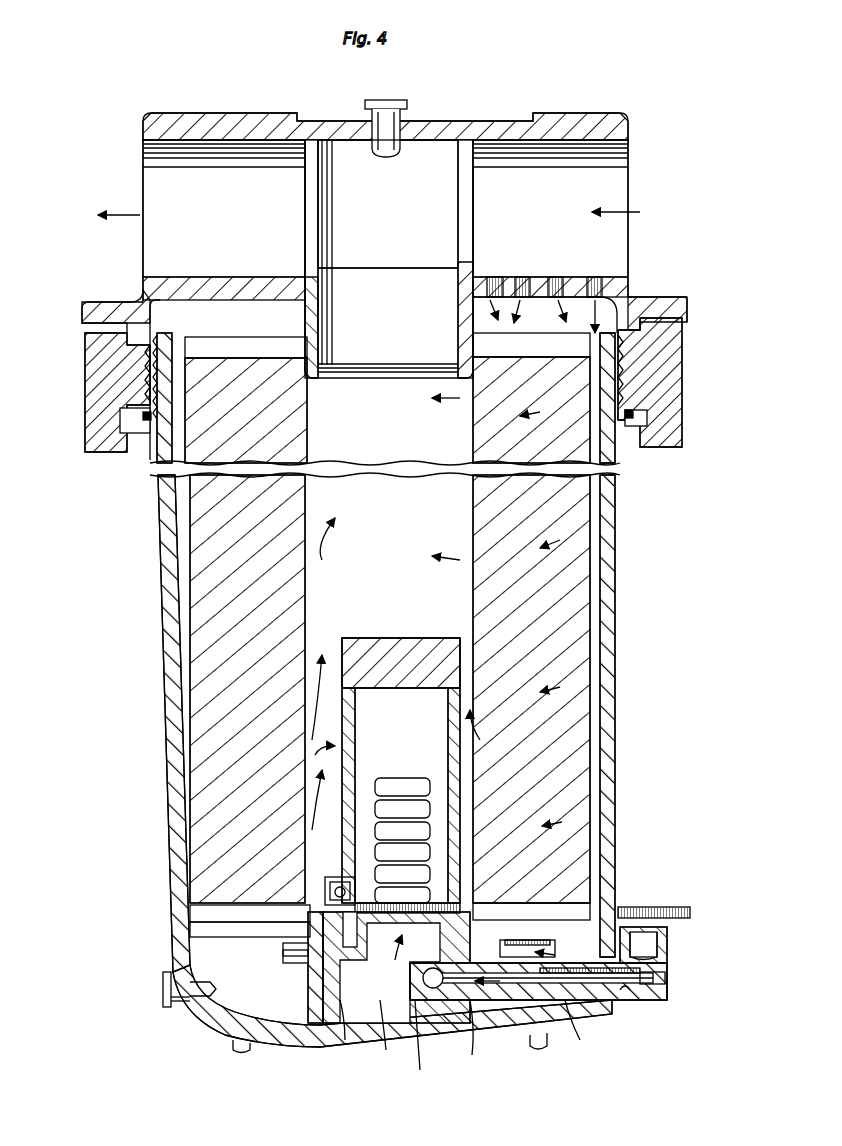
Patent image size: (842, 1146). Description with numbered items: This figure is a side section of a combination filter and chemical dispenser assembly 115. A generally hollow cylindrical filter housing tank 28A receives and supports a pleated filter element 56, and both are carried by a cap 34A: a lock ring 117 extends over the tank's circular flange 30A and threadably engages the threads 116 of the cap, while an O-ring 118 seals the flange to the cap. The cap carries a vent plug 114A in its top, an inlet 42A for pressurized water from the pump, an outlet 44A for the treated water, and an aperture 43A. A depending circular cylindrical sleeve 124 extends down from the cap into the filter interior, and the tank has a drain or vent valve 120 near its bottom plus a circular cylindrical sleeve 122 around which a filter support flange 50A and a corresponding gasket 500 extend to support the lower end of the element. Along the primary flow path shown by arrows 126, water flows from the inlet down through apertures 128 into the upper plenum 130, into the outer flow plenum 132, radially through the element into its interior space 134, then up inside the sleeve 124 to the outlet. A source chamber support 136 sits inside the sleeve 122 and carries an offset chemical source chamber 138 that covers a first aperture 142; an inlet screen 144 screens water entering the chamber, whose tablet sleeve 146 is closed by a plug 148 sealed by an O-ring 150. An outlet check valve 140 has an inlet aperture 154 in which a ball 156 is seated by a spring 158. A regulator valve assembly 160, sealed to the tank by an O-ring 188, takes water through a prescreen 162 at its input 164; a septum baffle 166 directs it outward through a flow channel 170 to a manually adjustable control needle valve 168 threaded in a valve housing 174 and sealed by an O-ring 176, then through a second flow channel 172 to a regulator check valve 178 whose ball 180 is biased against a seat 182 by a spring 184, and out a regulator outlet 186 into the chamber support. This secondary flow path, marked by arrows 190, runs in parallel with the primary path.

The vent plug 114A is at (392, 100).
The cap 34A is at (440, 118).
The outlet 44A is at (160, 165).
The inlet 42A is at (600, 148).
The aperture 43A is at (462, 176).
The apertures 128 is at (600, 285).
The upper plenum 130 is at (620, 305).
The primary flow path arrows 126 is at (330, 338).
The lock ring 117 is at (90, 355).
The threads 116 is at (682, 355).
The depending circular cylindrical sleeve 124 is at (165, 385).
The circular flange 30A is at (640, 426).
The O-ring 118 is at (628, 440).
The filter housing tank 28A is at (617, 492).
The combination filter and chemical dispenser assembly 115 is at (125, 512).
The filter element 56 is at (575, 540).
The interior space 134 is at (160, 573).
The outer flow plenum 132 is at (615, 612).
The O-ring 150 is at (355, 640).
The plug 148 is at (395, 640).
The chemical source chamber 138 is at (320, 750).
The tablet sleeve 146 is at (395, 800).
The inlet aperture 154 is at (330, 880).
The spring 158 is at (336, 892).
The ball 156 is at (340, 897).
The prescreen 162 is at (590, 835).
The secondary flow path arrows 190 is at (595, 930).
The control needle valve 168 is at (690, 912).
The O-ring 176 is at (668, 940).
The valve housing 174 is at (668, 962).
The first aperture 142 is at (415, 941).
The outlet check valve 140 is at (300, 945).
The seal 500 is at (283, 953).
The filter support flange 50A is at (287, 963).
The flow channel 170 is at (375, 985).
The regulator valve assembly 160 is at (660, 998).
The second flow channel 172 is at (610, 1002).
The O-ring 188 is at (630, 1000).
The drain or vent valve 120 is at (168, 1007).
The circular cylindrical sleeve 122 is at (290, 1045).
The source chamber support 136 is at (320, 1048).
The inlet screen 144 is at (350, 1047).
The regulator outlet 186 is at (387, 1041).
The spring 184 is at (419, 1048).
The regulator check valve 178 is at (440, 1000).
The ball 180 is at (470, 1042).
The seat 182 is at (440, 1000).
The input 164 is at (545, 1000).
The septum baffle 166 is at (590, 1000).